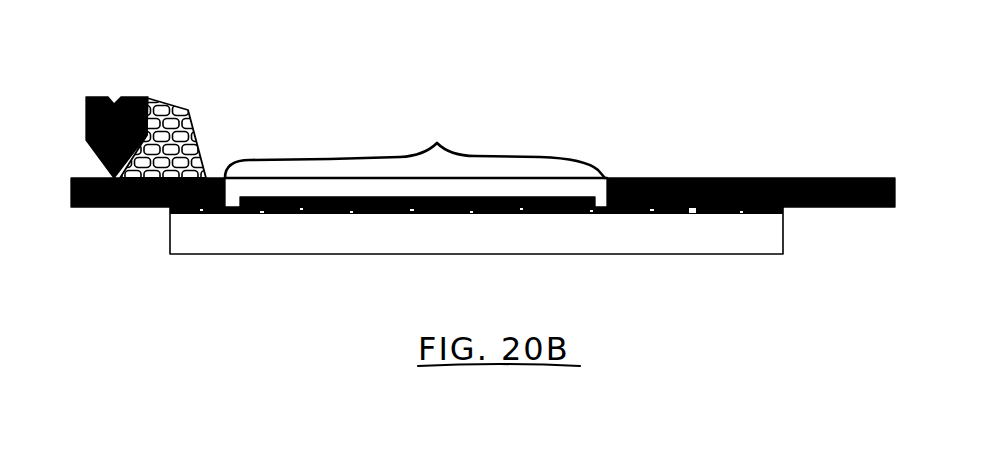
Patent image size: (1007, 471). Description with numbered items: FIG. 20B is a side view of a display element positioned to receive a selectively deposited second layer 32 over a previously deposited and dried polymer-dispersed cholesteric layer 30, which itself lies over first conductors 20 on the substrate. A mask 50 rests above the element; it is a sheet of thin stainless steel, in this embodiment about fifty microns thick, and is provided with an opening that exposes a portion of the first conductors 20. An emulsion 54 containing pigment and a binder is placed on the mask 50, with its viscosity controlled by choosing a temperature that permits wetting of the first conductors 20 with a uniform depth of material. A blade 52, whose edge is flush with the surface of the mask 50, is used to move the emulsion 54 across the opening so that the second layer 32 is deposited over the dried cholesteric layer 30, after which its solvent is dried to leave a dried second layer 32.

The first conductors 20 is at (442, 213).
The polymer-dispersed cholesteric layer 30 is at (535, 207).
The second layer 32 is at (185, 137).
The mask 50 is at (109, 207).
The blade 52 is at (106, 98).
The emulsion 54 is at (415, 143).